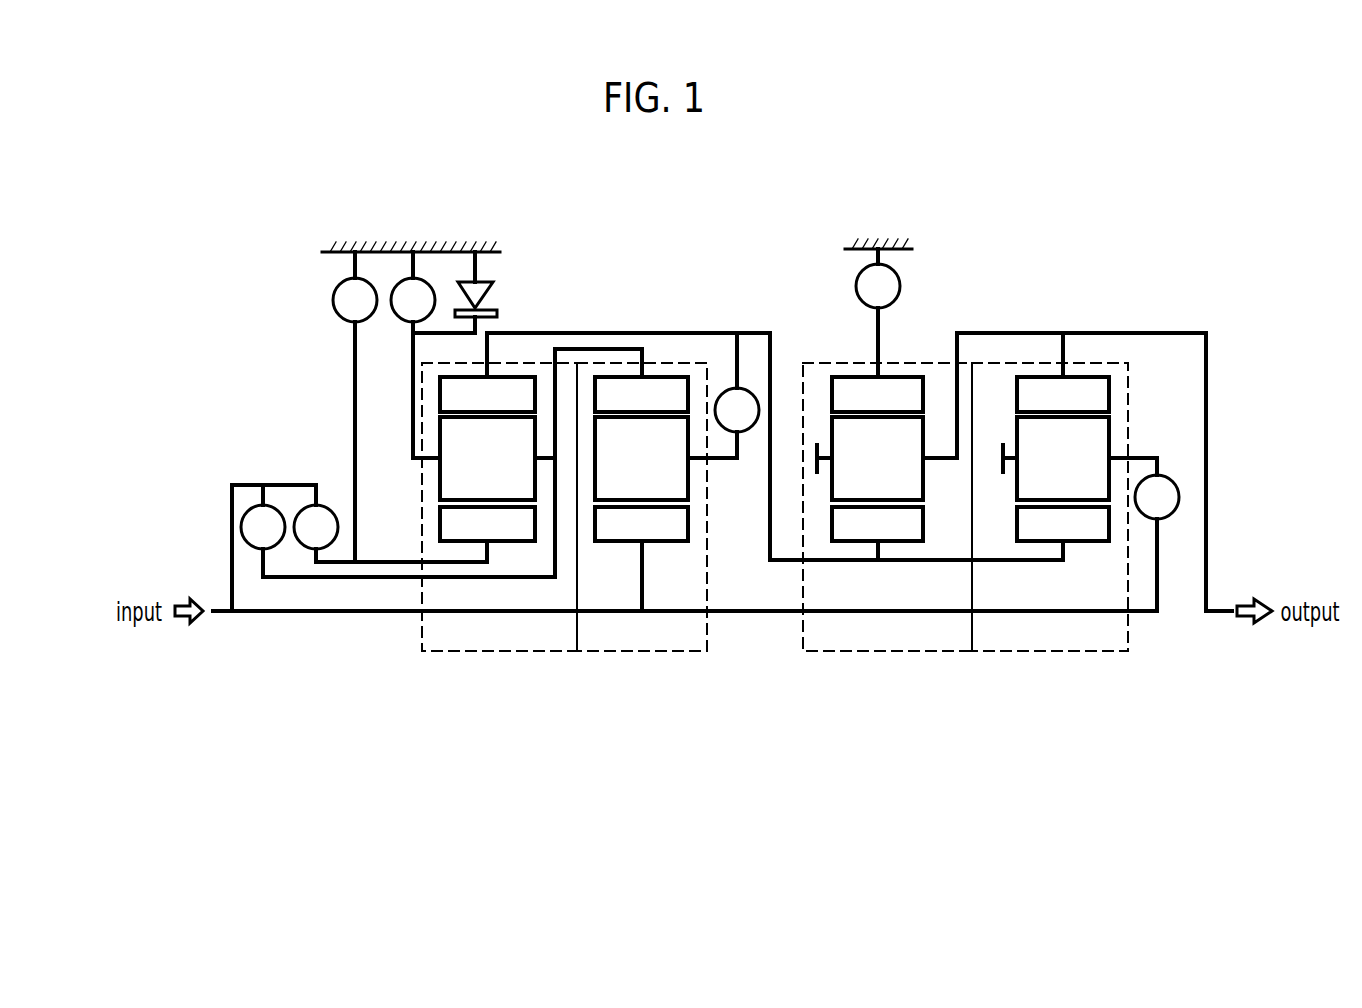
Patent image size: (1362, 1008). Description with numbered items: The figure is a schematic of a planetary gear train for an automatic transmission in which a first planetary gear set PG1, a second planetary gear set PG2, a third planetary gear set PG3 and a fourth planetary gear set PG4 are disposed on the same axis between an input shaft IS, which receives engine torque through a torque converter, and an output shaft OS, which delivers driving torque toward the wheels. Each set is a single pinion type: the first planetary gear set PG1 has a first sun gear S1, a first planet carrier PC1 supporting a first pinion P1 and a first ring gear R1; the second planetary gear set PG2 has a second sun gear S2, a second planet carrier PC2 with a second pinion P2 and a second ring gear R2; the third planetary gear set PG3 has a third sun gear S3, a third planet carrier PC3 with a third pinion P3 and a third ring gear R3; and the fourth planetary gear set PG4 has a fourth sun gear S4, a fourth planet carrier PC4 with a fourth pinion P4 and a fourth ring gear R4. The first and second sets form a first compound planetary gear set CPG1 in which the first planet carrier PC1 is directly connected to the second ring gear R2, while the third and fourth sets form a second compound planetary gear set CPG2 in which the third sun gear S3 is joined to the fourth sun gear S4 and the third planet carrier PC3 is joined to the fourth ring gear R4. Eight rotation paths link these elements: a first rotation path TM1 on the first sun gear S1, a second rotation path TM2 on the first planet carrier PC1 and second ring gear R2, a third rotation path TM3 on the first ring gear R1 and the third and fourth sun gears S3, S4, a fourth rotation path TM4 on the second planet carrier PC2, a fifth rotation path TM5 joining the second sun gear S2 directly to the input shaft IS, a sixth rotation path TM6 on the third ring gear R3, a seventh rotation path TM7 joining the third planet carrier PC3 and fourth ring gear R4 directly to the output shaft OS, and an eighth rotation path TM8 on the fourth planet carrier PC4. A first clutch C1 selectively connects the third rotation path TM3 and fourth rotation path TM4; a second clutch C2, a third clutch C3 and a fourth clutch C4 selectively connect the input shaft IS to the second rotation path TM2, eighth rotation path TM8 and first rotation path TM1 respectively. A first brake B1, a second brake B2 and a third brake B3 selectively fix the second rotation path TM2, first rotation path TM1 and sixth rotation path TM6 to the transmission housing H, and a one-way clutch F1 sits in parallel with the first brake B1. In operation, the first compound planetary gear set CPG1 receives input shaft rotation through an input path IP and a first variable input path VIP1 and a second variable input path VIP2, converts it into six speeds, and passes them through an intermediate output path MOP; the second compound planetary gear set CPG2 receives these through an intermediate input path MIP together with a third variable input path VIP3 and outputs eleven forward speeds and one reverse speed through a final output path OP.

The transmission housing H is at (418, 240).
The first brake B1 is at (433, 355).
The second brake B2 is at (355, 407).
The third brake B3 is at (878, 278).
The one-way clutch F1 is at (491, 292).
The first clutch C1 is at (737, 423).
The second clutch C2 is at (274, 548).
The third clutch C3 is at (1157, 543).
The fourth clutch C4 is at (316, 523).
The first rotation path TM1 is at (372, 558).
The second rotation path TM2 is at (595, 347).
The third rotation path TM3 is at (675, 331).
The fourth rotation path TM4 is at (738, 446).
The fifth rotation path TM5 is at (644, 572).
The sixth rotation path TM6 is at (880, 332).
The seventh rotation path TM7 is at (1014, 331).
The eighth rotation path TM8 is at (1160, 470).
The first planet carrier PC1 is at (432, 458).
The second planet carrier PC2 is at (696, 462).
The third planet carrier PC3 is at (817, 445).
The fourth planet carrier PC4 is at (1006, 472).
The first ring gear R1 is at (487, 394).
The second ring gear R2 is at (641, 394).
The third ring gear R3 is at (877, 394).
The fourth ring gear R4 is at (1063, 394).
The first pinion P1 is at (487, 458).
The second pinion P2 is at (641, 458).
The third pinion P3 is at (877, 458).
The fourth pinion P4 is at (1063, 458).
The first sun gear S1 is at (487, 524).
The second sun gear S2 is at (641, 524).
The third sun gear S3 is at (877, 524).
The fourth sun gear S4 is at (1063, 524).
The first planetary gear set PG1 is at (499, 576).
The second planetary gear set PG2 is at (642, 576).
The third planetary gear set PG3 is at (887, 576).
The fourth planetary gear set PG4 is at (1050, 576).
The first compound planetary gear set CPG1 is at (633, 790).
The second compound planetary gear set CPG2 is at (1048, 790).
The input shaft IS is at (292, 614).
The output shaft OS is at (1208, 562).
The input path IP is at (548, 619).
The intermediate input path MIP is at (740, 540).
The intermediate output path MOP is at (790, 345).
The final output path OP is at (1182, 312).
The first variable input path VIP1 is at (455, 573).
The second variable input path VIP2 is at (565, 565).
The third variable input path VIP3 is at (1140, 444).